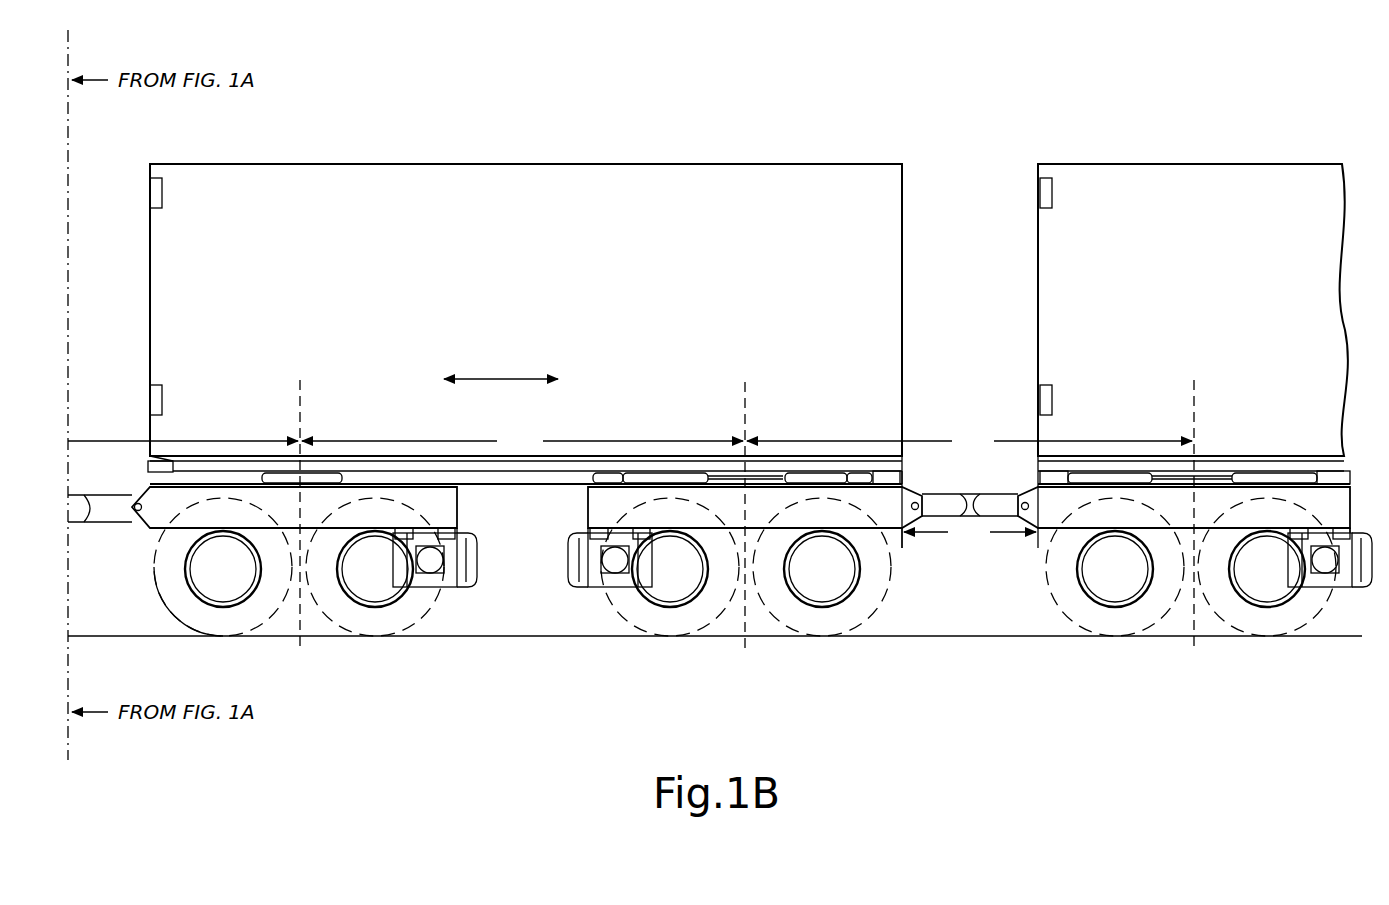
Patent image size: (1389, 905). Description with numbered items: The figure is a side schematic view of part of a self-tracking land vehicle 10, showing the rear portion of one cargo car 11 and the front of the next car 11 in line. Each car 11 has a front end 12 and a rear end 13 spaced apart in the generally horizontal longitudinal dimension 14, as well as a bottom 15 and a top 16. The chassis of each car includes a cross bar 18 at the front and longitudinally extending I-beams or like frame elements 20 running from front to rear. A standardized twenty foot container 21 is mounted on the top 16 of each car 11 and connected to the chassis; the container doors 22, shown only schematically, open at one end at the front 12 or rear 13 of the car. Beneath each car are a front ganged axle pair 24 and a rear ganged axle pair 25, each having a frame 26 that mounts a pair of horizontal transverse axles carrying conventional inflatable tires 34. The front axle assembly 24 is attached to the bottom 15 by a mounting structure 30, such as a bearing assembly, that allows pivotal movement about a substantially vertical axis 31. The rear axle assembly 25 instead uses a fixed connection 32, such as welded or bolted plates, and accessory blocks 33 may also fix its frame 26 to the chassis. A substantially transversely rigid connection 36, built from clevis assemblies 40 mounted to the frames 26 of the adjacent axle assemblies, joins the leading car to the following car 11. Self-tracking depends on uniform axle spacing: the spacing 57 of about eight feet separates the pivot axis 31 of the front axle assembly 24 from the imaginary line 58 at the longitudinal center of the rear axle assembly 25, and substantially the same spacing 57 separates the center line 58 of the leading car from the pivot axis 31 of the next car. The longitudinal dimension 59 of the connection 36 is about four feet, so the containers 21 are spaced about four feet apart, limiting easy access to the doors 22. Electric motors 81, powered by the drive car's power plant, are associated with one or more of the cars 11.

The self-tracking land vehicle 10 is at (895, 148).
The car 11 is at (1018, 338).
The front end 12 is at (142, 458).
The rear end 13 is at (912, 466).
The longitudinal dimension 14 is at (497, 377).
The bottom 15 is at (556, 499).
The top 16 is at (360, 453).
The cross bar 18 is at (148, 468).
The frame elements 20 is at (480, 468).
The standardized container 21 is at (405, 183).
The doors 22 is at (143, 246).
The front ganged axle pair 24 is at (156, 603).
The rear ganged axle pair 25 is at (909, 549).
The frame 26 is at (328, 500).
The mounting structure 30 is at (364, 480).
The vertical axis 31 is at (301, 420).
The fixed connection 32 is at (690, 478).
The accessory blocks 33 is at (610, 476).
The inflatable tires 34 is at (385, 628).
The transversely rigid connection 36 is at (104, 526).
The clevis assemblies 40 is at (1030, 488).
The spacing 57 is at (630, 441).
The imaginary line 58 is at (745, 422).
The longitudinal dimension of connection 59 is at (970, 532).
The motors 81 is at (463, 590).